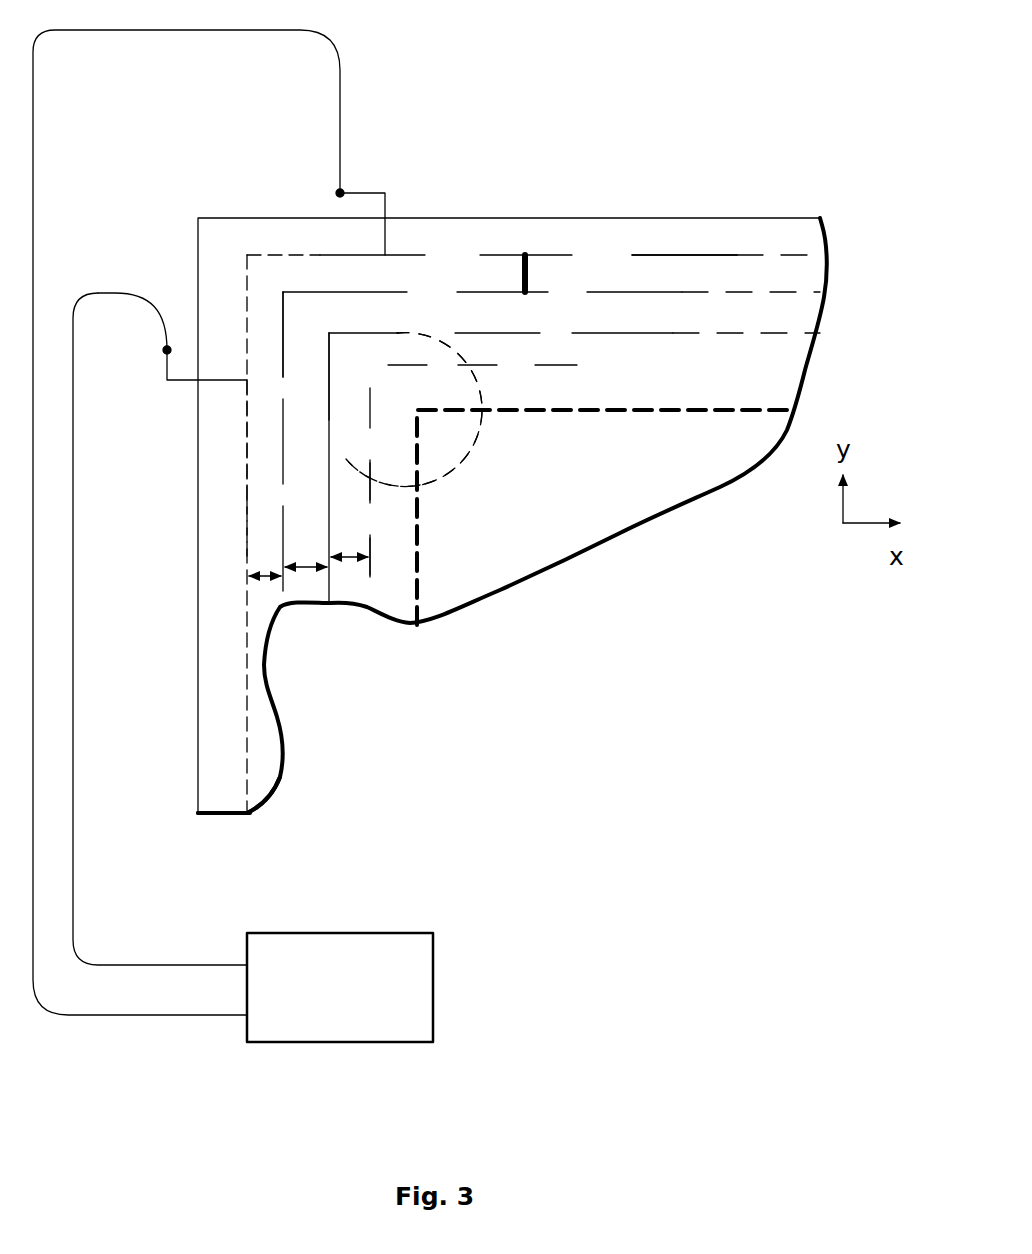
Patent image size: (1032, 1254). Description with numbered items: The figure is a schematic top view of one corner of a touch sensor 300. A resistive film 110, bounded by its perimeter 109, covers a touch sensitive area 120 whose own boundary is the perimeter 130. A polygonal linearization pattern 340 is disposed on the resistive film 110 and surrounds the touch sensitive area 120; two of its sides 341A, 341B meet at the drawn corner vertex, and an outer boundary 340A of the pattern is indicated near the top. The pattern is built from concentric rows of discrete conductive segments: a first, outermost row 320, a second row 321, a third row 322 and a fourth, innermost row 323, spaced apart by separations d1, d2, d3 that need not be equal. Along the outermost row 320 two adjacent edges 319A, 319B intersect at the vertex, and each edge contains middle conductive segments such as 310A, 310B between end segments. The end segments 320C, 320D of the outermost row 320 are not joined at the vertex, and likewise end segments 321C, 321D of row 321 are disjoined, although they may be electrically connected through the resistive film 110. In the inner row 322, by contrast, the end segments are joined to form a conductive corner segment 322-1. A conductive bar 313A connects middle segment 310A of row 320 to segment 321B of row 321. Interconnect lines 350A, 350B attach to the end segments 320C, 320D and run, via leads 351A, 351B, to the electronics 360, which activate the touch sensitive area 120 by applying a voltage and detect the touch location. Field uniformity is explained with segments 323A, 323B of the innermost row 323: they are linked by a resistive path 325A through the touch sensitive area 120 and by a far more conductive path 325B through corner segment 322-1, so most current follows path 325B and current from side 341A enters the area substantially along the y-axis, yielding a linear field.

The touch sensor 300 is at (809, 58).
The resistive film 110 is at (212, 700).
The perimeter of resistive film 109 is at (198, 792).
The touch sensitive area 120 is at (606, 541).
The perimeter of touch sensitive area 130 is at (675, 410).
The middle conductive segment 310A is at (563, 257).
The middle conductive segment 310B is at (247, 497).
The conductive bar 313A is at (528, 280).
The edge of row 320 319A is at (773, 252).
The edge of row 320 319B is at (262, 790).
The first row of discrete conductive segments 320 is at (265, 668).
The end conductive segment 320C is at (397, 253).
The end conductive segment 320D is at (247, 410).
The second row of discrete conductive segments 321 is at (277, 618).
The conductive segment 321B is at (490, 292).
The end conductive segment 321C is at (348, 292).
The end conductive segment 321D is at (283, 355).
The third row of discrete conductive segments 322 is at (328, 605).
The conductive corner segment 322-1 is at (329, 348).
The fourth row of discrete conductive segments 323 is at (391, 620).
The discrete conductive segment 323A is at (480, 367).
The discrete conductive segment 323B is at (370, 498).
The resistive path 325A is at (470, 427).
The resistive path 325B is at (427, 347).
The linearization pattern 340 is at (345, 462).
The bonded region top 340A is at (407, 263).
The side of linearization pattern 341A is at (597, 275).
The side of linearization pattern 341B is at (258, 515).
The electrically conductive interconnect line 350A is at (362, 193).
The electrically conductive interconnect line 350B is at (167, 370).
The electrically conductive lead 351A is at (153, 1017).
The electrically conductive lead 351B is at (137, 962).
The electronics 360 is at (433, 962).
The separation between rows 320 and 321 d1 is at (266, 556).
The separation between rows 321 and 322 d2 is at (306, 548).
The separation between rows 322 and 323 d3 is at (349, 537).